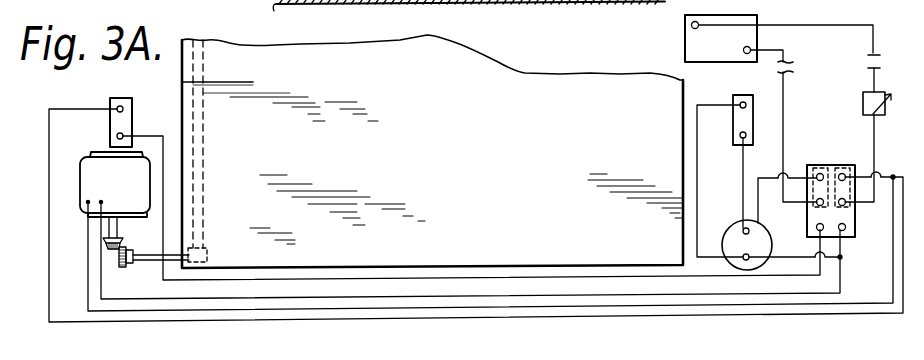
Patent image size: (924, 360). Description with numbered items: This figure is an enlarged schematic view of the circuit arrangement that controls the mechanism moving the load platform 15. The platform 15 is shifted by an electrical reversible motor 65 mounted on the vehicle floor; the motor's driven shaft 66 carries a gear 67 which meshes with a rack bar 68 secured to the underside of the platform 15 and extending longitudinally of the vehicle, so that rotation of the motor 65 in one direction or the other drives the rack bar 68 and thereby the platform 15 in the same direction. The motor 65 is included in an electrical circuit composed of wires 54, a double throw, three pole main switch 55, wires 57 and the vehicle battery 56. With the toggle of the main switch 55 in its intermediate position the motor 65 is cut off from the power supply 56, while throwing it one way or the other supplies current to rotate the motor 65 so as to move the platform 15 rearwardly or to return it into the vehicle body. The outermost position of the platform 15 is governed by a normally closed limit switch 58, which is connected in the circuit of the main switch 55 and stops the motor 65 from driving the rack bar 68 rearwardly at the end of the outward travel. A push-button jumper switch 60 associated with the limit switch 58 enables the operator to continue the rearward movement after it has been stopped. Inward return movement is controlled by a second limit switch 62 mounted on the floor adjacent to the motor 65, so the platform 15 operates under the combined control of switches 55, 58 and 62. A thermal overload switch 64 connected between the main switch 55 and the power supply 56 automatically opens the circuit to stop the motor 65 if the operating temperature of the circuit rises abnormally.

The platform 15 is at (466, 122).
The wires 54 is at (417, 297).
The main switch 55 is at (858, 239).
The vehicle battery 56 is at (706, 52).
The wires 57 is at (870, 74).
The limit switch 58 is at (740, 116).
The push-button jumper switch 60 is at (762, 240).
The second limit switch 62 is at (120, 98).
The thermal overload switch 64 is at (863, 106).
The electrical reversible motor 65 is at (87, 172).
The driven shaft 66 is at (117, 226).
The gear 67 is at (207, 248).
The rack bar 68 is at (200, 142).